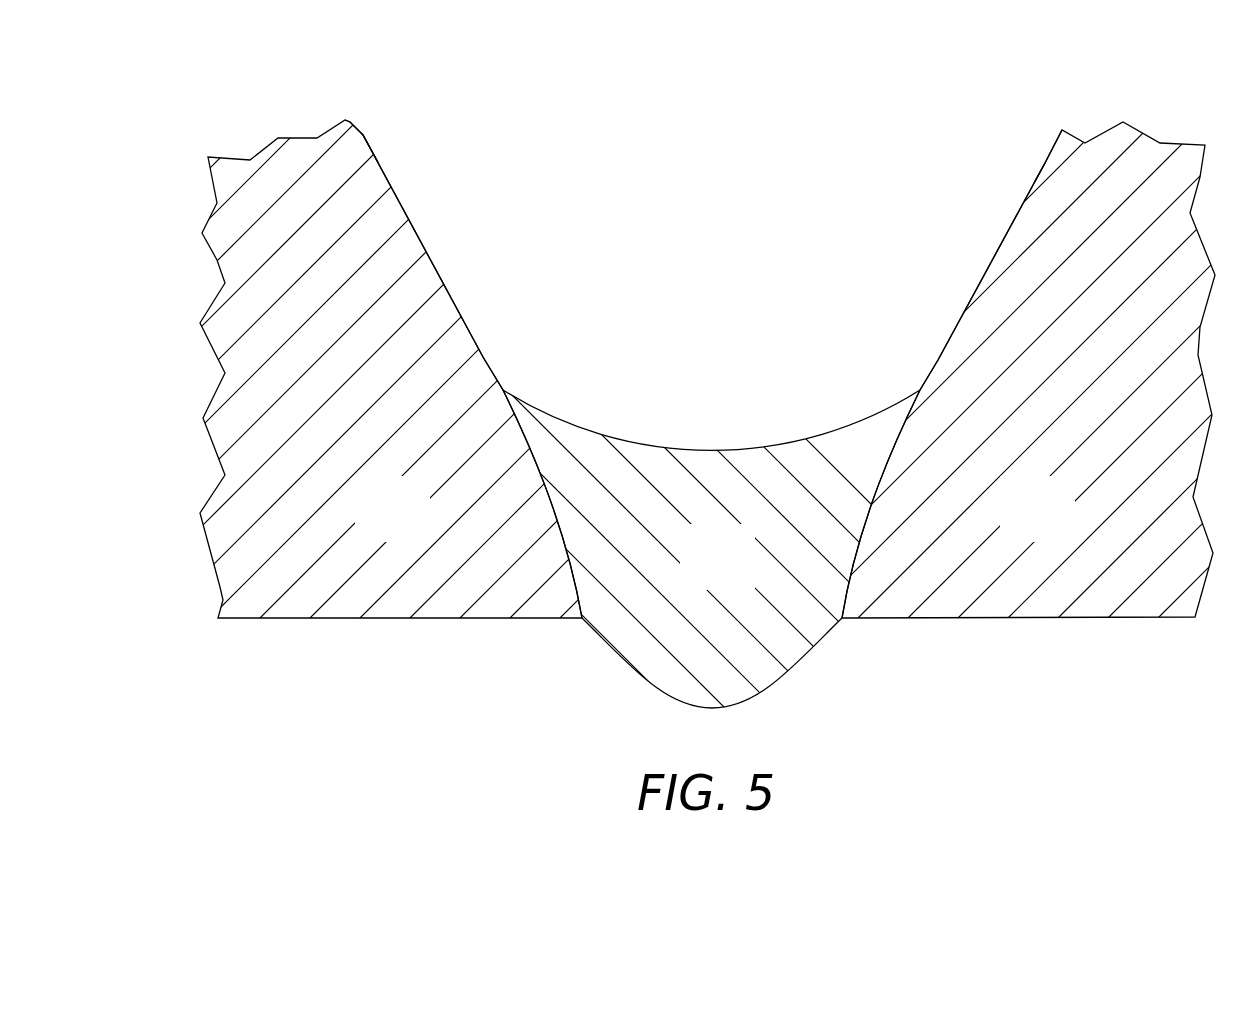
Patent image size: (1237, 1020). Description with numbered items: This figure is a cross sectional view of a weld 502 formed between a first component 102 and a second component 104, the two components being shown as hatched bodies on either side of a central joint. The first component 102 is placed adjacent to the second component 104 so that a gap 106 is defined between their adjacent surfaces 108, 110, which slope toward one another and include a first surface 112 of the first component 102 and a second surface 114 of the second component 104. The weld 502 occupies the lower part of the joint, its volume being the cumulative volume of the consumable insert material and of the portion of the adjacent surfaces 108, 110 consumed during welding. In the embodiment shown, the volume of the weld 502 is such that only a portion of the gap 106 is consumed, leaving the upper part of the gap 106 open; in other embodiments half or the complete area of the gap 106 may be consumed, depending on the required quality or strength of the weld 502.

The first component 102 is at (408, 526).
The second component 104 is at (1053, 527).
The gap 106 is at (736, 194).
The adjacent surface 108 is at (426, 194).
The adjacent surface 110 is at (1000, 194).
The first surface 112 is at (378, 157).
The second surface 114 is at (1047, 162).
The weld 502 is at (735, 574).